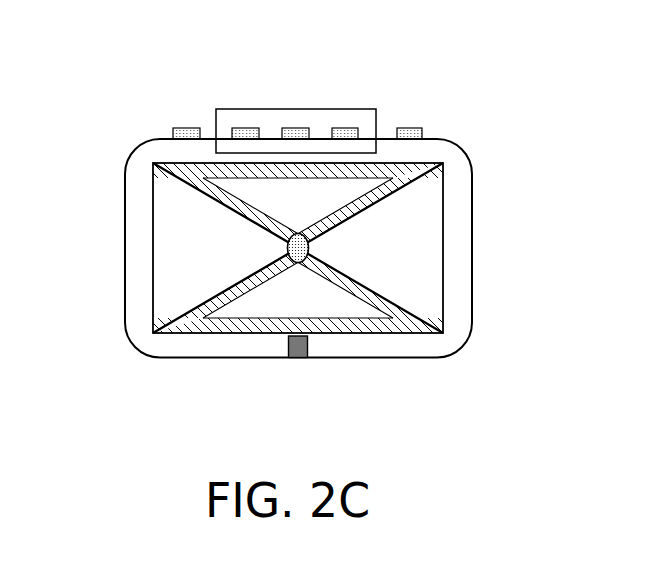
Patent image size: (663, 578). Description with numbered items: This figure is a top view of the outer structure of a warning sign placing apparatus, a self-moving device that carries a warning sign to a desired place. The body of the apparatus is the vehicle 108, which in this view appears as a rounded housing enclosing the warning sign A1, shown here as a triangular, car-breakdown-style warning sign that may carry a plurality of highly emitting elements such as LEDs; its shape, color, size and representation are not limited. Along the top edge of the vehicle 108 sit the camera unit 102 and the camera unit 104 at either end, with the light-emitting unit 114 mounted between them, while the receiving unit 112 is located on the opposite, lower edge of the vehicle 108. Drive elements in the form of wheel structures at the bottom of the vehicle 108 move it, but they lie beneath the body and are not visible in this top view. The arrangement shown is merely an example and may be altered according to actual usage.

The camera unit 102 is at (182, 127).
The camera unit 104 is at (410, 127).
The vehicle 108 is at (133, 253).
The receiving unit 112 is at (299, 360).
The light-emitting unit 114 is at (297, 109).
The warning sign A1 is at (378, 297).